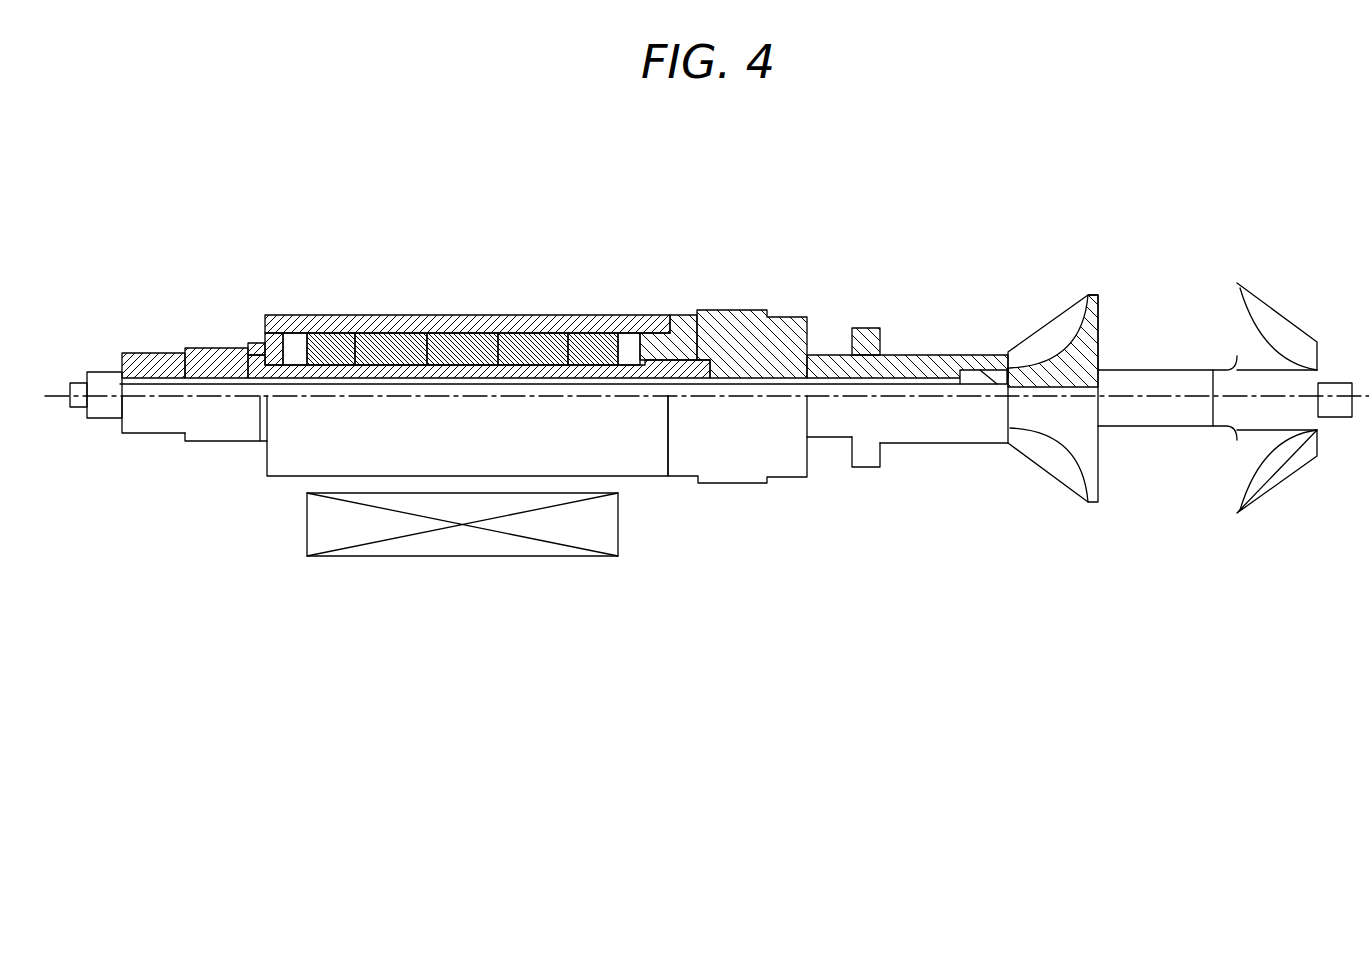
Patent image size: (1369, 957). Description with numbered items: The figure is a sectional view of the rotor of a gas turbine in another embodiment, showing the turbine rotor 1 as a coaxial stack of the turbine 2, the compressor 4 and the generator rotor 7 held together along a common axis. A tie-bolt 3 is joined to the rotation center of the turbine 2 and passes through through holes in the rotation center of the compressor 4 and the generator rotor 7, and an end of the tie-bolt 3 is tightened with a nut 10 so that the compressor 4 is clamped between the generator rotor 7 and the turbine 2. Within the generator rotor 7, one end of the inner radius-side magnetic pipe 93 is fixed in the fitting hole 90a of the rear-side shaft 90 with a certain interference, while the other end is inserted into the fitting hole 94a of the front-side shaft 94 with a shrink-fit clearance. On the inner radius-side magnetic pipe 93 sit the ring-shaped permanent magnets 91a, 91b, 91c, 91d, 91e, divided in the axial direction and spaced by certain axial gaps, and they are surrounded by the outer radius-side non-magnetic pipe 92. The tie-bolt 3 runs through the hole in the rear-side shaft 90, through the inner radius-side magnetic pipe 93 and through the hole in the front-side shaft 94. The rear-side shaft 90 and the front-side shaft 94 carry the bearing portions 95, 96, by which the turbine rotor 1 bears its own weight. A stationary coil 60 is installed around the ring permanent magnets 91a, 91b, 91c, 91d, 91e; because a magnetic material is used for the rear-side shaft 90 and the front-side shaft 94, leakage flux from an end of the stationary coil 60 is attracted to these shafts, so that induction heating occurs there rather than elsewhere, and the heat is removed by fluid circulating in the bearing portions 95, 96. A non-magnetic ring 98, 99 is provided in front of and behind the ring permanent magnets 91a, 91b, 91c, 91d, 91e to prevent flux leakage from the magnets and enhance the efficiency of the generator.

The turbine rotor 1 is at (718, 235).
The turbine 2 is at (1248, 345).
The tie-bolt 3 is at (78, 406).
The compressor 4 is at (1094, 297).
The generator rotor 7 is at (506, 233).
The nut 10 is at (107, 376).
The stationary coil 60 is at (616, 527).
The rear-side shaft 90 is at (930, 354).
The fitting hole 90a is at (690, 356).
The ring-shaped permanent magnet 91a is at (328, 343).
The ring-shaped permanent magnet 91b is at (392, 343).
The ring-shaped permanent magnet 91c is at (460, 343).
The ring-shaped permanent magnet 91d is at (533, 343).
The ring-shaped permanent magnet 91e is at (590, 343).
The outer radius-side non-magnetic pipe 92 is at (658, 346).
The inner radius-side magnetic pipe 93 is at (276, 368).
The front-side shaft 94 is at (213, 356).
The fitting hole 94a is at (260, 342).
The bearing portion 95 is at (832, 354).
The bearing portion 96 is at (158, 358).
The non-magnetic ring 98 is at (635, 320).
The non-magnetic ring 99 is at (296, 343).